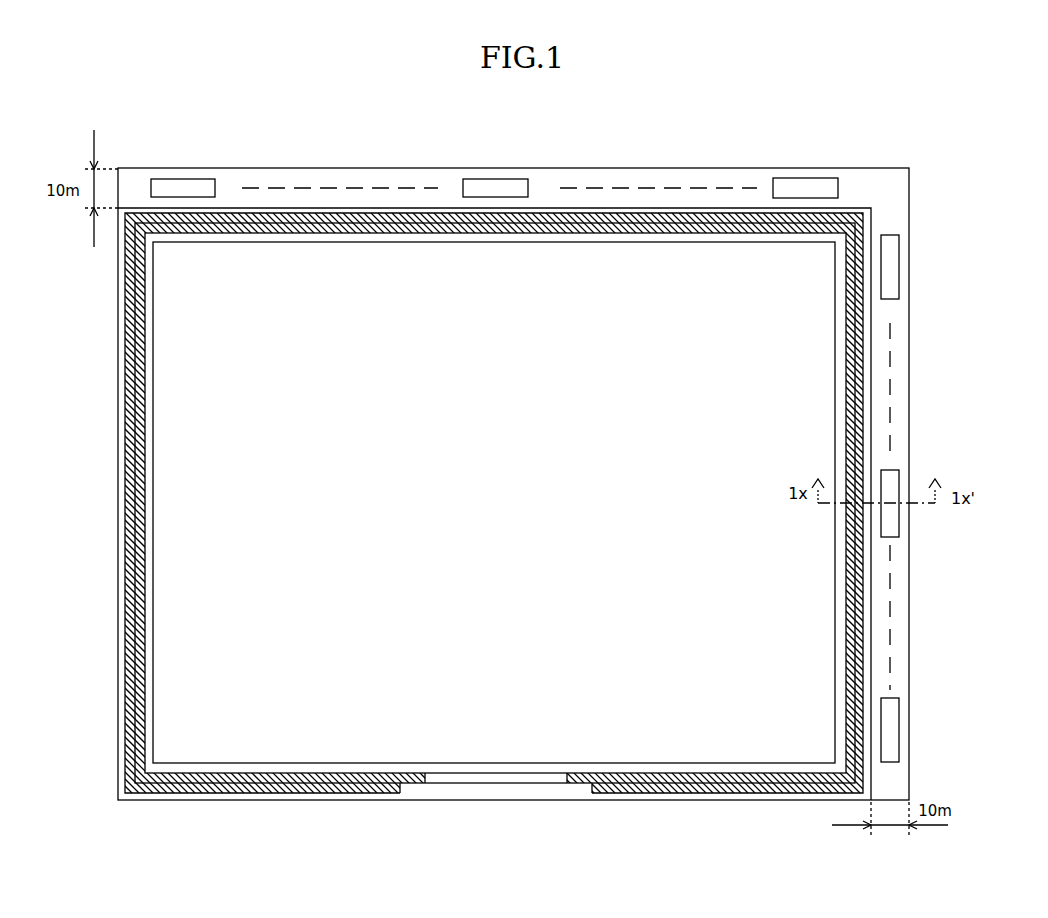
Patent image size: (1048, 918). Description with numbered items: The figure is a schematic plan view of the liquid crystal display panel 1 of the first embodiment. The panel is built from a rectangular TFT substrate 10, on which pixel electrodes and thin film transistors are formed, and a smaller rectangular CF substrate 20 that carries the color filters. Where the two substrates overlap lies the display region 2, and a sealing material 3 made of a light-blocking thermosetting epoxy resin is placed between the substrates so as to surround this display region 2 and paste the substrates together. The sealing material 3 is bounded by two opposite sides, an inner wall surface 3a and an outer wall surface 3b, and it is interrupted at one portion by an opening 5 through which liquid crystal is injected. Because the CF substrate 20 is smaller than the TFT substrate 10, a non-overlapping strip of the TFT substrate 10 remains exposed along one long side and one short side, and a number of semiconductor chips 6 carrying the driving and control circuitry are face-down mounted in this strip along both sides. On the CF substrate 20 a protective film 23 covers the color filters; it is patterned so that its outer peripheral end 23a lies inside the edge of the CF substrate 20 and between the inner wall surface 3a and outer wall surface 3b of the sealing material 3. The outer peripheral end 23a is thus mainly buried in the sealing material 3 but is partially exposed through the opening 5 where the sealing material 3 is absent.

The liquid crystal display panel 1 is at (884, 167).
The display region 2 is at (569, 503).
The sealing material 3 is at (858, 450).
The inner wall surface 3a is at (844, 363).
The outer wall surface 3b is at (866, 380).
The opening 5 is at (451, 772).
The semiconductor chip 6 is at (183, 187).
The TFT substrate 10 is at (808, 167).
The CF substrate 20 is at (718, 206).
The protective film 23 is at (852, 343).
The outer peripheral end 23a is at (858, 317).